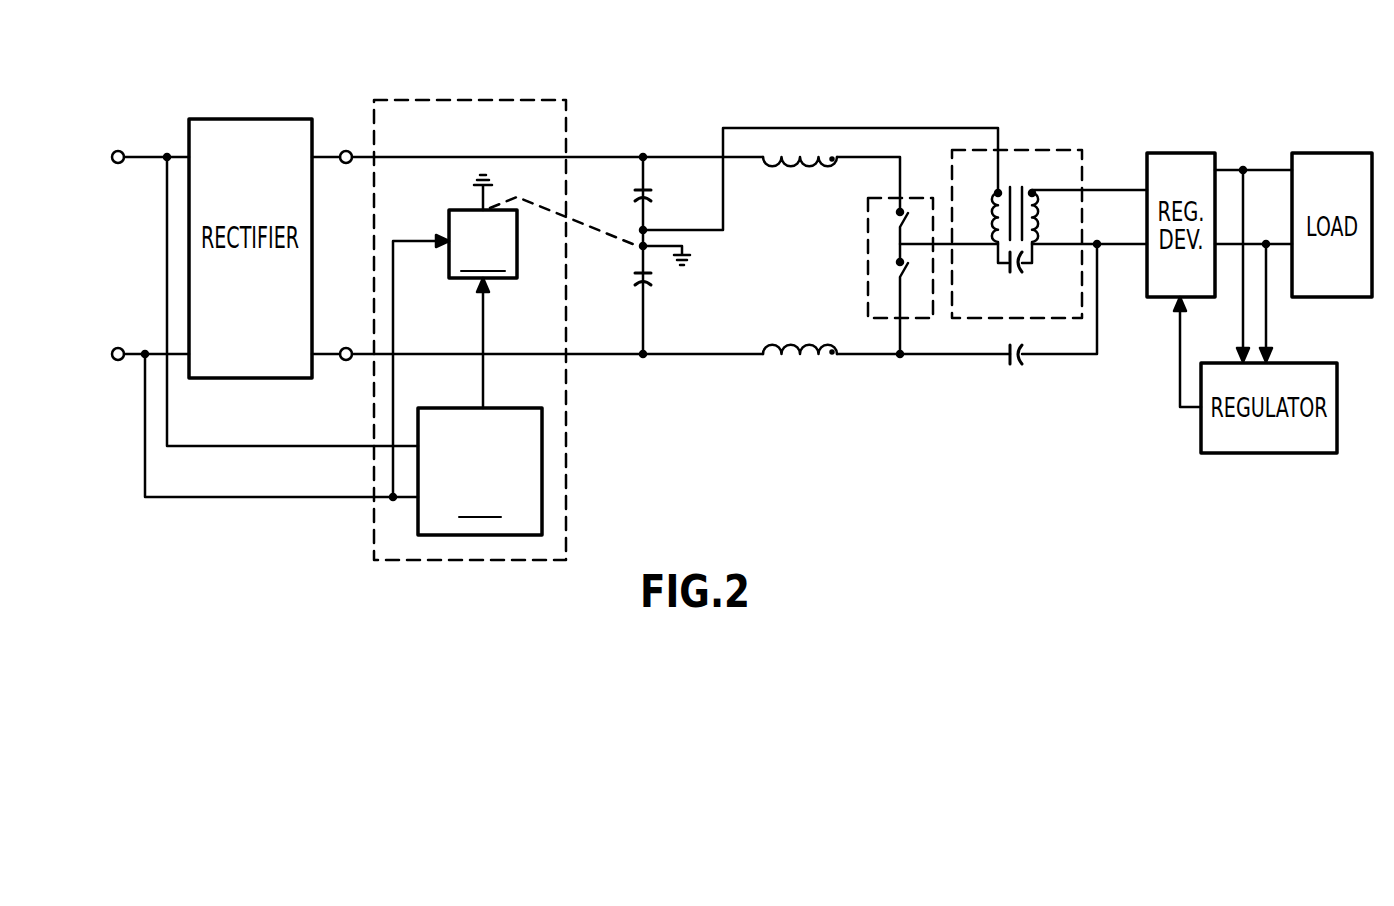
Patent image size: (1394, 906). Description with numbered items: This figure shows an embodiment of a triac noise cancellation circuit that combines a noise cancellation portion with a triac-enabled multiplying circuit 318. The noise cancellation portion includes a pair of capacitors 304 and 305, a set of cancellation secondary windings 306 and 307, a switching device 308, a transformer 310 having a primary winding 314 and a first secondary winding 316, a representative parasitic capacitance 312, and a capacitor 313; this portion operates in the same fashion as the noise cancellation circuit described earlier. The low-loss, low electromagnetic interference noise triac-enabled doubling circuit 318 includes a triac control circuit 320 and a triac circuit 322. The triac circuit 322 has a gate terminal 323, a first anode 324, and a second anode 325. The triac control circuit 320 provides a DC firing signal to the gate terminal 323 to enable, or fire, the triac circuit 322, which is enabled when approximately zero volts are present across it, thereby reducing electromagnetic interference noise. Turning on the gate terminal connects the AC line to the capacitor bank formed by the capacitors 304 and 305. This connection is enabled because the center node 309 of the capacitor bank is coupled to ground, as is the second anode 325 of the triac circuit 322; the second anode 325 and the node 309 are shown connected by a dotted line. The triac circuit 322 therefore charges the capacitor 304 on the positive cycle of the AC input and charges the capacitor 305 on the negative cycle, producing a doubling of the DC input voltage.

The capacitor 304 is at (653, 188).
The capacitor 305 is at (651, 282).
The cancellation secondary winding 306 is at (793, 162).
The cancellation secondary winding 307 is at (792, 358).
The switching device 308 is at (868, 267).
The node 309 is at (641, 247).
The transformer 310 is at (1022, 187).
The parasitic capacitance 312 is at (1022, 265).
The capacitor 313 is at (1022, 360).
The primary winding 314 is at (997, 191).
The first secondary winding 316 is at (1032, 193).
The triac-enabled multiplying circuit 318 is at (480, 100).
The triac control circuit 320 is at (480, 471).
The triac circuit 322 is at (544, 237).
The gate terminal 323 is at (458, 343).
The first anode 324 is at (421, 348).
The second anode 325 is at (507, 185).